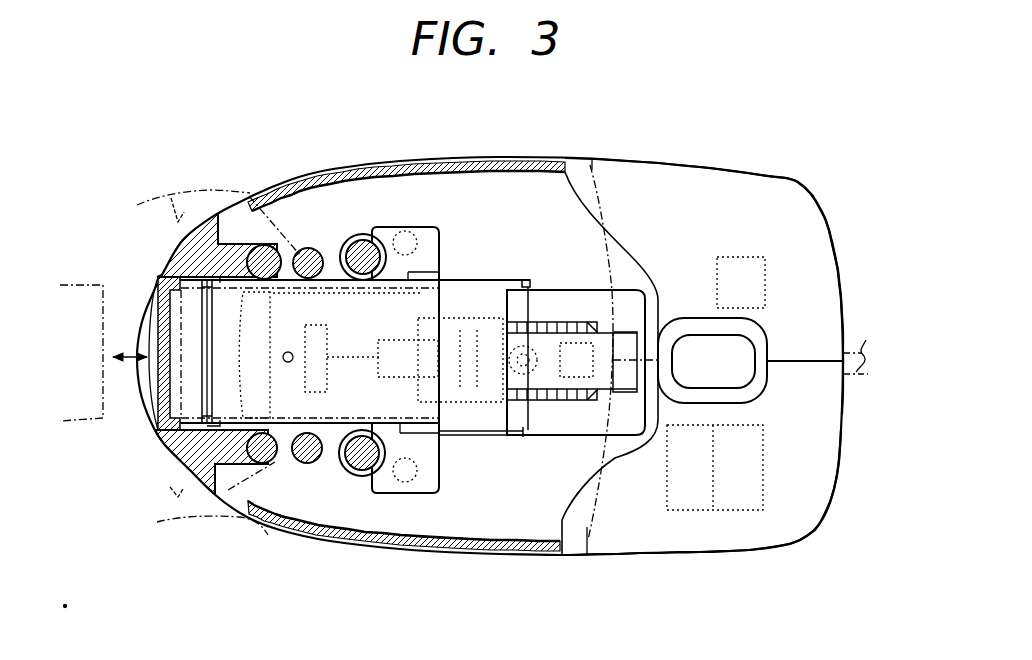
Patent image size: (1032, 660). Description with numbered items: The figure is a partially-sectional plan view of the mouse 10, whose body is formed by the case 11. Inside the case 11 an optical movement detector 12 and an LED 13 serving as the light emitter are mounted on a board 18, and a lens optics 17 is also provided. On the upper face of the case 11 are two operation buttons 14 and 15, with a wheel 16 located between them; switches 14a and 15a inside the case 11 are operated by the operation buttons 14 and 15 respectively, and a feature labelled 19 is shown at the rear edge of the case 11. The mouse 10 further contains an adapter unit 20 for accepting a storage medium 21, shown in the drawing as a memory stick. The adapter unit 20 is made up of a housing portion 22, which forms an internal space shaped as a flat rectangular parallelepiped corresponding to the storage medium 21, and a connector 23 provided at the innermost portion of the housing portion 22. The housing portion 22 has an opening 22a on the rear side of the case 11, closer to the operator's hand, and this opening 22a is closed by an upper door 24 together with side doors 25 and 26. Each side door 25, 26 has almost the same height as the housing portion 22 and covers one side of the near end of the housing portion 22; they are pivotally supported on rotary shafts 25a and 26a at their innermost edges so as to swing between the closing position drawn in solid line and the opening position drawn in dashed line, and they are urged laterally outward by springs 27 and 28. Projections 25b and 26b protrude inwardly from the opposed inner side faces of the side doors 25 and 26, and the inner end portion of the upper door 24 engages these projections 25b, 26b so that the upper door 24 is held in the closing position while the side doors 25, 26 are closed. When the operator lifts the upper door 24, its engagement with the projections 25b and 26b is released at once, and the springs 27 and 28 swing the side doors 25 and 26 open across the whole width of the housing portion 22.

The mouse 10 is at (686, 158).
The case 11 is at (487, 158).
The optical movement detector 12 is at (566, 318).
The LED 13 is at (406, 336).
The operation button 14 is at (791, 181).
The switch 14a is at (712, 271).
The operation button 15 is at (788, 535).
The switch 15a is at (731, 512).
The wheel 16 is at (748, 354).
The lens optics 17 is at (525, 416).
The board 18 is at (582, 428).
The button 19 is at (866, 340).
The adapter unit 20 is at (468, 274).
The storage medium 21 is at (76, 277).
The housing portion 22 is at (438, 433).
The opening 22a is at (157, 396).
The connector 23 is at (508, 290).
The upper door 24 is at (172, 345).
The side door 25 is at (205, 188).
The rotary shaft 25a is at (277, 251).
The projection 25b is at (165, 205).
The side door 26 is at (185, 470).
The rotary shaft 26a is at (264, 462).
The projection 26b is at (158, 430).
The spring 27 is at (240, 285).
The spring 28 is at (243, 415).